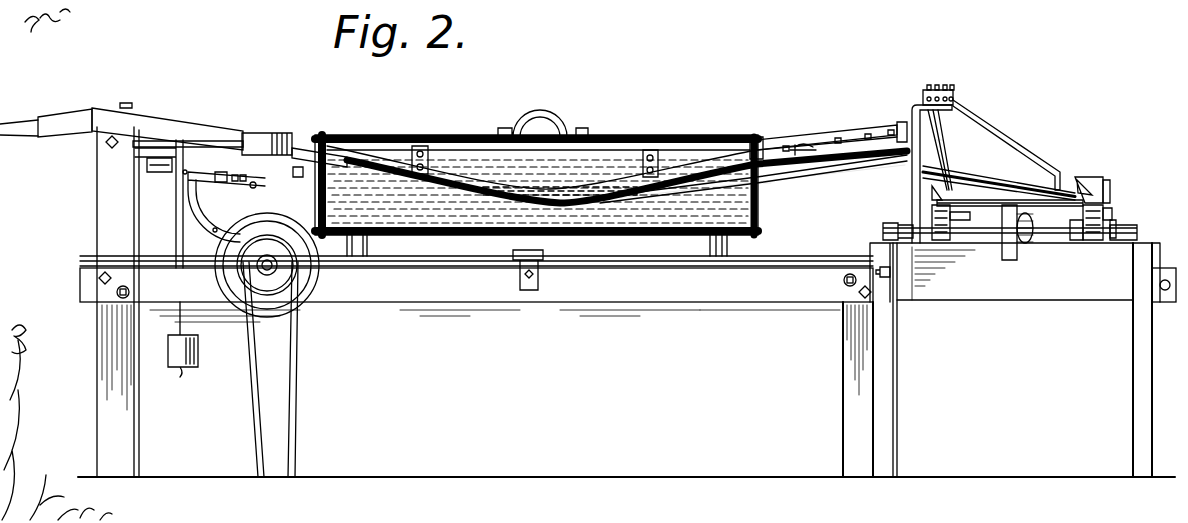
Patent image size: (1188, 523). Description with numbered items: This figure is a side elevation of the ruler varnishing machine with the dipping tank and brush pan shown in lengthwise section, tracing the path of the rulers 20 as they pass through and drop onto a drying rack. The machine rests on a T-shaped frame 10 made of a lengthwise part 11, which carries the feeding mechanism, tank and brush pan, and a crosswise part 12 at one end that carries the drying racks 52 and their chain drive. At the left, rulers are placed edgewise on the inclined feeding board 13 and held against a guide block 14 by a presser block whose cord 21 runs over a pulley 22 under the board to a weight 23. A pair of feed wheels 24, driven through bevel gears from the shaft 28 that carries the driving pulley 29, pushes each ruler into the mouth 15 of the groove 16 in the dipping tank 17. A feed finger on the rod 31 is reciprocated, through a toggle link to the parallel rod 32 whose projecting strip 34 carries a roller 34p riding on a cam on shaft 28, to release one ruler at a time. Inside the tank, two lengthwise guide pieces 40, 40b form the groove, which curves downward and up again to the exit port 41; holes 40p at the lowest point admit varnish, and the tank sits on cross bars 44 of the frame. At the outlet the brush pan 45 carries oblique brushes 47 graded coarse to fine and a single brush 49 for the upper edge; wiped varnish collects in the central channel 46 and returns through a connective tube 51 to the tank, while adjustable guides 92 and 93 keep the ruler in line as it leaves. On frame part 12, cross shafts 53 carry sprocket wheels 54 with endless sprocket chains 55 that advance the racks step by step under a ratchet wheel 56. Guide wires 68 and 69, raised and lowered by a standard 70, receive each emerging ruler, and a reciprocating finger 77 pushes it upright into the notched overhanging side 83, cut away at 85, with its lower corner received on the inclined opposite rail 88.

The frame 10 is at (887, 378).
The frame part 11 is at (631, 305).
The frame part 12 is at (1013, 306).
The feeding board 13 is at (52, 122).
The guide block 14 is at (157, 124).
The mouth 15 is at (330, 150).
The groove 16 is at (383, 166).
The dipping tank 17 is at (620, 137).
The rulers 20 is at (366, 163).
The cord 21 is at (133, 197).
The pulley 22 is at (188, 150).
The weight 23 is at (178, 358).
The feed wheels 24 is at (268, 138).
The shaft 28 is at (264, 270).
The driving pulley 29 is at (302, 292).
The rod 31 is at (19, 144).
The rod 32 is at (160, 176).
The projecting strip 34 is at (196, 217).
The roller 34p is at (201, 256).
The guide pieces 40 is at (583, 182).
The guide pieces 40b is at (758, 206).
The holes 40p is at (553, 184).
The exit port 41 is at (766, 144).
The cross bars 44 is at (370, 250).
The brush pan 45 is at (835, 142).
The channel 46 is at (752, 185).
The brushes 47 is at (860, 145).
The brush 49 is at (801, 146).
The connective tube 51 is at (766, 184).
The drying racks 52 is at (1105, 203).
The cross shafts 53 is at (1118, 228).
The sprocket wheels 54 is at (1090, 245).
The sprocket chains 55 is at (1133, 212).
The ratchet wheel 56 is at (1025, 246).
The guide wires 68 is at (940, 144).
The guide wires 69 is at (1007, 140).
The standard 70 is at (946, 90).
The finger 77 is at (932, 164).
The notched overhanging side 83 is at (1090, 186).
The cut away 85 is at (1108, 190).
The rail 88 is at (930, 196).
The guide 92 is at (797, 143).
The end guide 93 is at (915, 105).